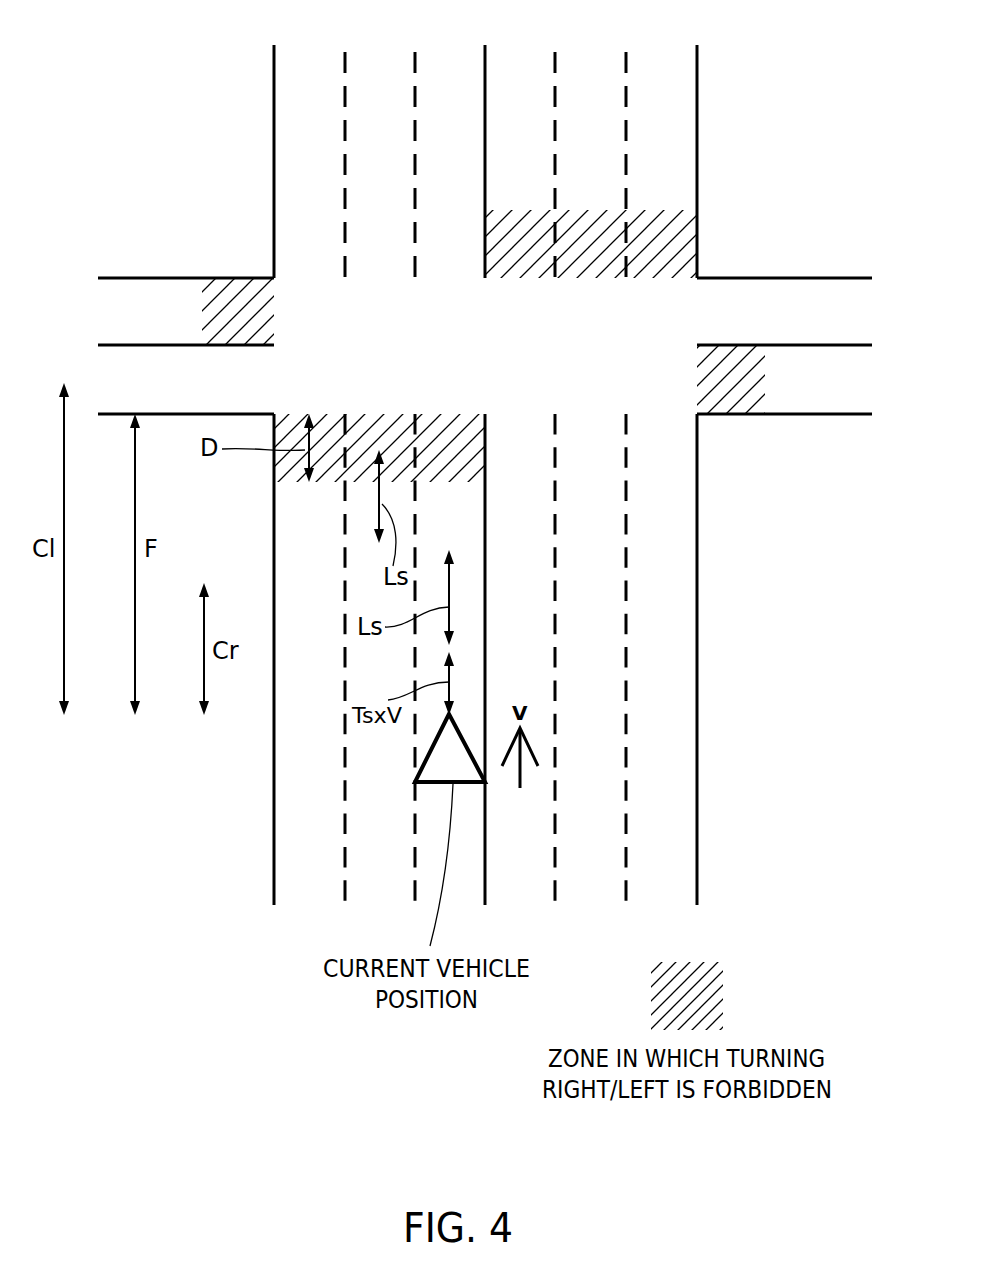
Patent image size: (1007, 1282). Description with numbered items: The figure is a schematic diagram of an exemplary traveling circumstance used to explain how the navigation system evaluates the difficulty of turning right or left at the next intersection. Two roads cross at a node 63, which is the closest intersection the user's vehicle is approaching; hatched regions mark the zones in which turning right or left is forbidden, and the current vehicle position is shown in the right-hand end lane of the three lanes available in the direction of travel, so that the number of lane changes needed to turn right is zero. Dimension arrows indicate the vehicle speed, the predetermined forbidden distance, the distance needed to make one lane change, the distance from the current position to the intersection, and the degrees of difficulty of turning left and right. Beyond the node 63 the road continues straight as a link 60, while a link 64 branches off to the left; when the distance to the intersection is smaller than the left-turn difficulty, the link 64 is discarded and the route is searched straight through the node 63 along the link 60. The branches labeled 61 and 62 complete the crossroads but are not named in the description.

The link 60 is at (245, 88).
The right-side road (east road) 61 is at (805, 257).
The current road (south road) 62 is at (718, 811).
The node 63 is at (505, 363).
The link 64 is at (117, 258).